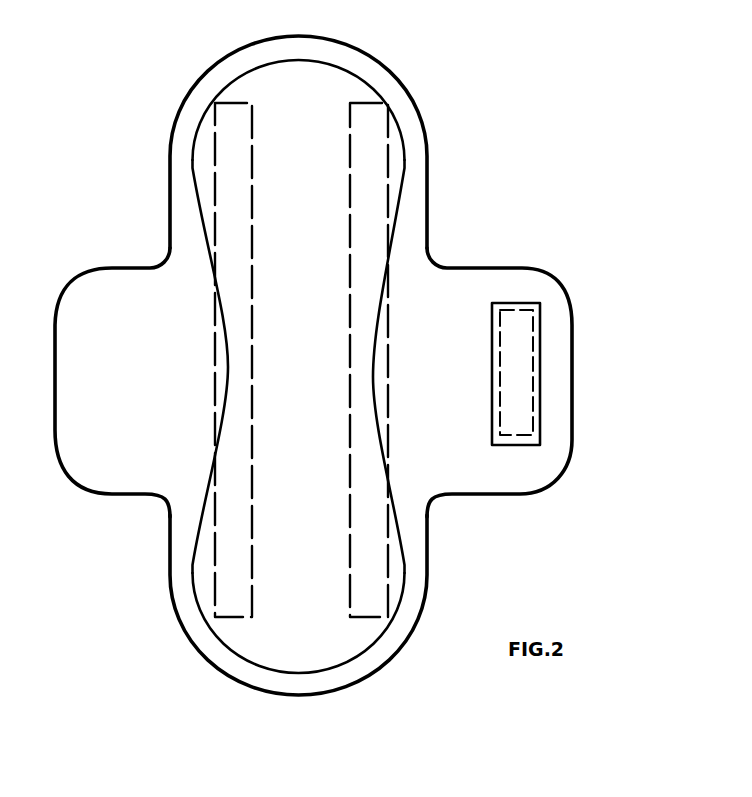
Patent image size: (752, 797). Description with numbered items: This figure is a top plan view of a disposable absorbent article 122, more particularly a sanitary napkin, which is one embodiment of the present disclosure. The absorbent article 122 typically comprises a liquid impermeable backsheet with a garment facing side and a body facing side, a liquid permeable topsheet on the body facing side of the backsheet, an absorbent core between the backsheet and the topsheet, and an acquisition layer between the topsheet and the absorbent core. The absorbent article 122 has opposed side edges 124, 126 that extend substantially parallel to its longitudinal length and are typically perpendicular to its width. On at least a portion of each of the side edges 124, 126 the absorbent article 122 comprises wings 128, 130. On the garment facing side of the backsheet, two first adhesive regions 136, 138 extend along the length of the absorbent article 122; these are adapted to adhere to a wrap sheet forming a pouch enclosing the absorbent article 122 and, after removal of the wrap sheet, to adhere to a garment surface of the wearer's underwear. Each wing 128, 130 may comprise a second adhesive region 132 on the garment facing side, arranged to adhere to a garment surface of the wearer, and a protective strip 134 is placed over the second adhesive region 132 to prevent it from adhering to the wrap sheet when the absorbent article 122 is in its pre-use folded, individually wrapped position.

The disposable absorbent article 122 is at (530, 73).
The side edge 124 is at (168, 188).
The side edge 126 is at (430, 190).
The wing 128 is at (117, 283).
The wing 130 is at (478, 292).
The second adhesive region 132 is at (537, 359).
The protective strip 134 is at (540, 422).
The first adhesive region 136 is at (243, 102).
The first adhesive region 138 is at (363, 98).